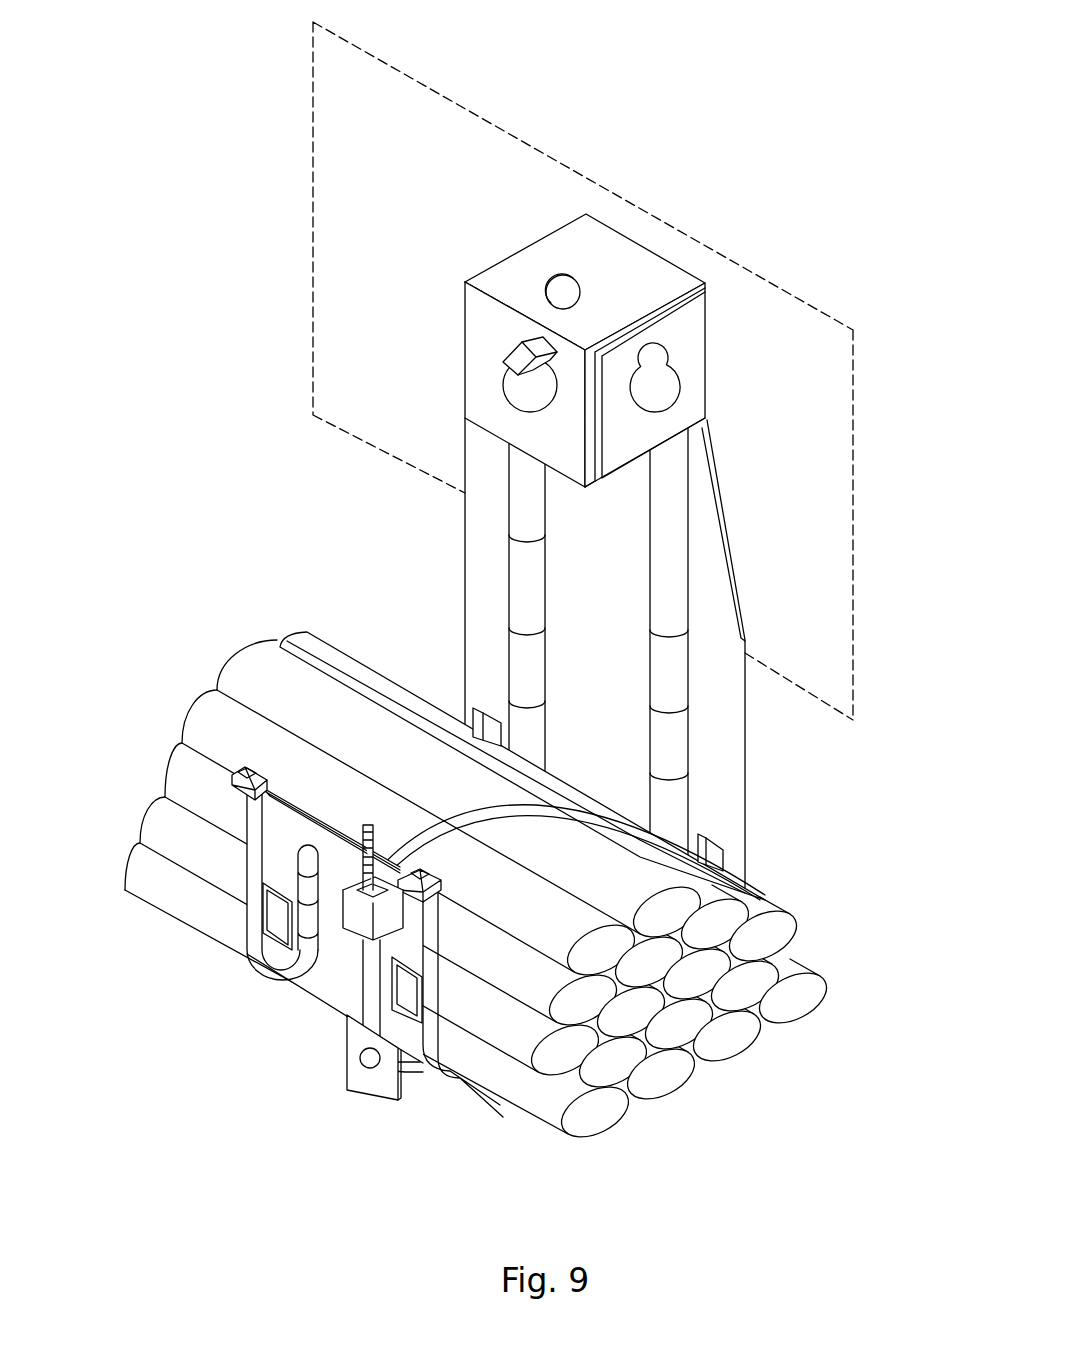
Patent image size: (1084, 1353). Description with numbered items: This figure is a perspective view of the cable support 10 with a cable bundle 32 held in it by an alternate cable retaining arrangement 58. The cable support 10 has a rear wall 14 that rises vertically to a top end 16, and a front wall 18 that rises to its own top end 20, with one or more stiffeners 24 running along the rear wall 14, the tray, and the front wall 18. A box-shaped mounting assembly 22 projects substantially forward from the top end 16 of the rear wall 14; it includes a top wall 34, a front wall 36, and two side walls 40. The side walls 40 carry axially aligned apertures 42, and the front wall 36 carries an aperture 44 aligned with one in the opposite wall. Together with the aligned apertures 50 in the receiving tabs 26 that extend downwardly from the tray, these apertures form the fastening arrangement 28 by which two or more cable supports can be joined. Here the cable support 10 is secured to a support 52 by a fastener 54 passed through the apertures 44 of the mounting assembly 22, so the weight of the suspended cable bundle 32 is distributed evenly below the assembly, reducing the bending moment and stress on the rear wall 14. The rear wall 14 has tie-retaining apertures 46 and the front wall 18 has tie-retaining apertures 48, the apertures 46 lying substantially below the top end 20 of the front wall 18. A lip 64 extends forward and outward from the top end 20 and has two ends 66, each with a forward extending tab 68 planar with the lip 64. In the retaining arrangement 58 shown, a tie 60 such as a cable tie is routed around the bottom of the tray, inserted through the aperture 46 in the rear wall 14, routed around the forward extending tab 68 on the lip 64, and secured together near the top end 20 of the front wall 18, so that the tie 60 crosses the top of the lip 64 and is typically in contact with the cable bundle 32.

The cable support 10 is at (685, 576).
The rear wall 14 is at (585, 625).
The top end 16 is at (703, 430).
The front wall 18 is at (322, 876).
The top end 20 is at (445, 834).
The box-shaped mounting assembly 22 is at (539, 332).
The stiffeners 24 is at (513, 534).
The receiving tabs 26 is at (354, 1085).
The fastening arrangement 28 is at (519, 332).
The cable bundle 32 is at (763, 903).
The top wall 34 is at (596, 291).
The front wall 36 is at (451, 376).
The side walls 40 is at (673, 385).
The apertures 42 is at (657, 392).
The apertures 44 is at (527, 392).
The tie-retaining apertures 46 is at (485, 718).
The tie-retaining apertures 48 is at (283, 906).
The apertures 50 is at (362, 1063).
The support 52 is at (398, 103).
The fastener 54 is at (518, 347).
The cable retaining arrangement 58 is at (395, 843).
The tie 60 is at (520, 815).
The lip 64 is at (327, 815).
The ends 66 is at (240, 777).
The forward extending tab 68 is at (230, 787).